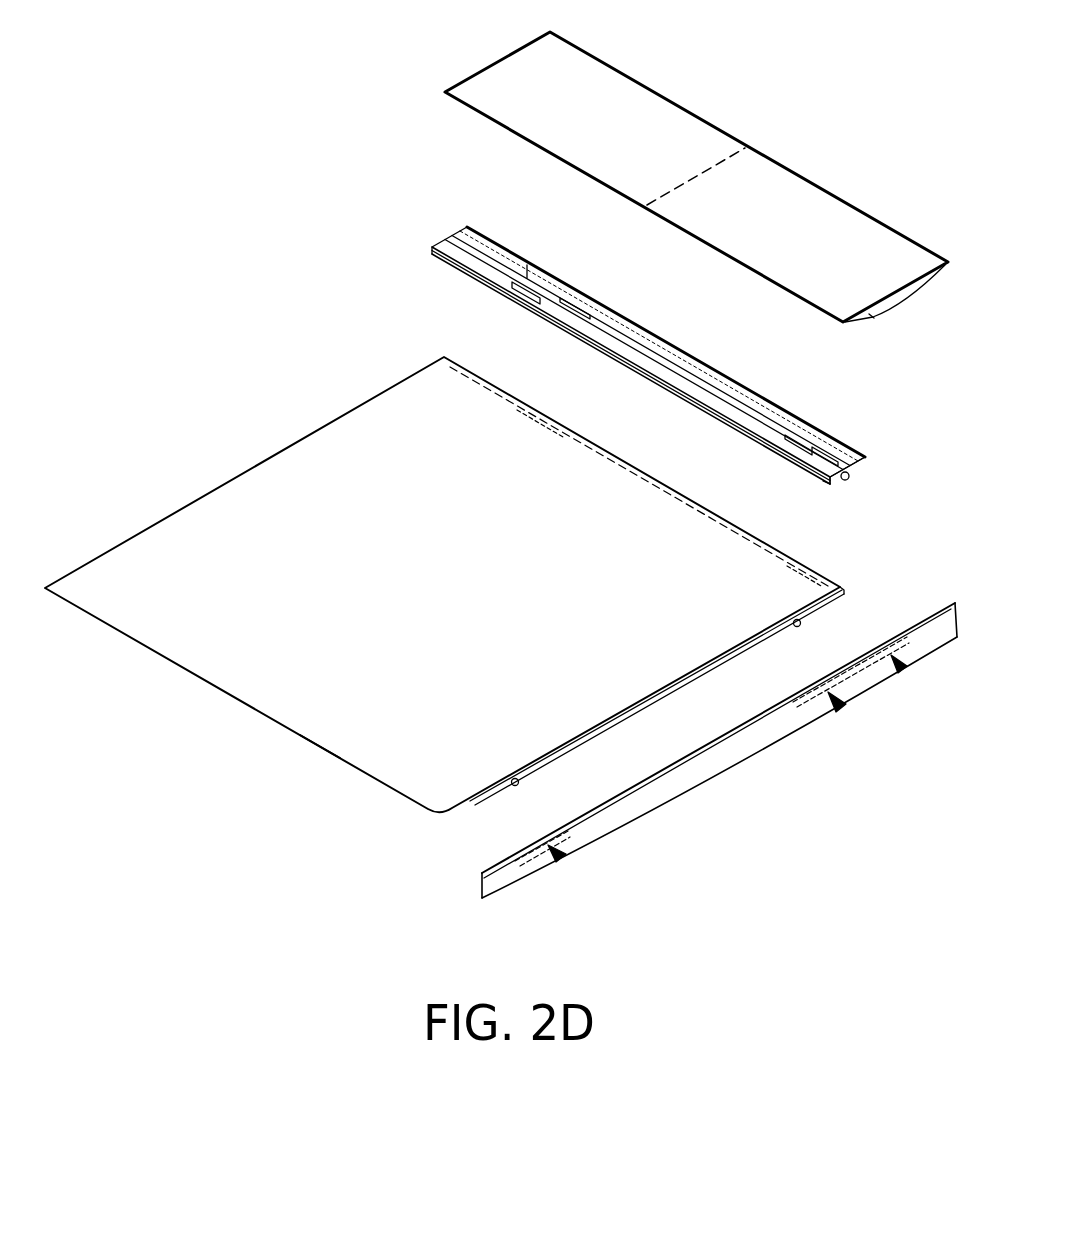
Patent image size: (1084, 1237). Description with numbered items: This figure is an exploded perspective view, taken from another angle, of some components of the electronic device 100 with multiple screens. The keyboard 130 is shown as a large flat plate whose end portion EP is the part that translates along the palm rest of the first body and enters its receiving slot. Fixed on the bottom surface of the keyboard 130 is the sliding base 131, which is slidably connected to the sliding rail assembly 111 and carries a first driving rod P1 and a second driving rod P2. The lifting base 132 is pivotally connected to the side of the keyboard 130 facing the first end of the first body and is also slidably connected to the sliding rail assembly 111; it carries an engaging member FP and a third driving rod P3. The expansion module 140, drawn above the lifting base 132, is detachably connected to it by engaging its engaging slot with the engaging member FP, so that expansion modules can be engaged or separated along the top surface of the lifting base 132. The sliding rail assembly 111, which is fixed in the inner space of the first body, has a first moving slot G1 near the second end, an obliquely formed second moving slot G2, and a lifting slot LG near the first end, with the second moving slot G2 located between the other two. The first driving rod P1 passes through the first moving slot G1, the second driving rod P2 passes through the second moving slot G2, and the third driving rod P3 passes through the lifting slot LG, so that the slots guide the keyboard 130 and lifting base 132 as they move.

The electronic device with multiple screens 100 is at (501, 493).
The expansion module 140 is at (682, 122).
The engaging member FP is at (641, 367).
The lifting base 132 is at (823, 478).
The third driving rod P3 is at (851, 479).
The keyboard 130 is at (459, 605).
The sliding base 131 is at (665, 695).
The first driving rod P1 is at (519, 788).
The second driving rod P2 is at (801, 625).
The end portion EP is at (321, 740).
The sliding rail assembly 111 is at (719, 774).
The first moving slot G1 is at (560, 866).
The second moving slot G2 is at (839, 714).
The lifting slot LG is at (900, 676).